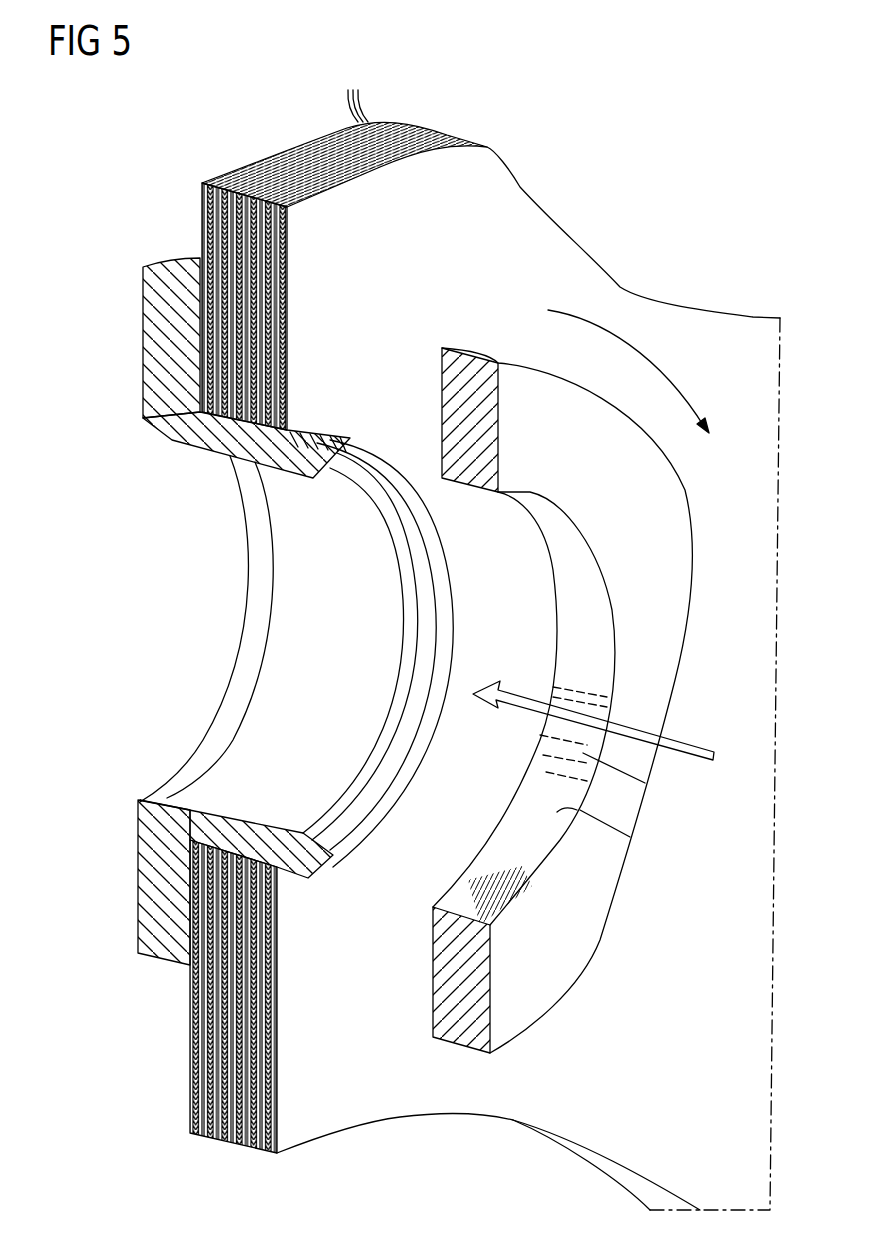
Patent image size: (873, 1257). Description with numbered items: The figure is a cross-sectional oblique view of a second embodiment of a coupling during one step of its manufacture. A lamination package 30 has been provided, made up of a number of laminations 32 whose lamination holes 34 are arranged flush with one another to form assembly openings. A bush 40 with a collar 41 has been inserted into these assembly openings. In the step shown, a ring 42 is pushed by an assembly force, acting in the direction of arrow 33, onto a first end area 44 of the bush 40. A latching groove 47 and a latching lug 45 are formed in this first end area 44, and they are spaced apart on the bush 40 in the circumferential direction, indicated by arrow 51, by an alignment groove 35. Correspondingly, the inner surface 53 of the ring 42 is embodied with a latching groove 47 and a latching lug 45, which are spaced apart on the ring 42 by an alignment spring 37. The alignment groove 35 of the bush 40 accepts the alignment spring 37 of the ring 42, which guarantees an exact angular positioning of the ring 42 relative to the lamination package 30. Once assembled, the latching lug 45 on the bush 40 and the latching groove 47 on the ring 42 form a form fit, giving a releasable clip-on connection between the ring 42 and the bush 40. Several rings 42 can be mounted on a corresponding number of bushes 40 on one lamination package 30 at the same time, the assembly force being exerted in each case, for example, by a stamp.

The lamination package 30 is at (202, 183).
The laminations 32 is at (353, 89).
The arrow 33 is at (697, 743).
The lamination holes 34 is at (170, 852).
The alignment groove 35 is at (437, 707).
The alignment spring 37 is at (645, 783).
The bush 40 is at (143, 323).
The collar 41 is at (147, 895).
The ring 42 is at (678, 530).
The first end area 44 is at (333, 473).
The latching lug 45 is at (473, 493).
The latching groove 47 is at (322, 430).
The arrow 51 is at (622, 330).
The inner surface 53 is at (630, 837).